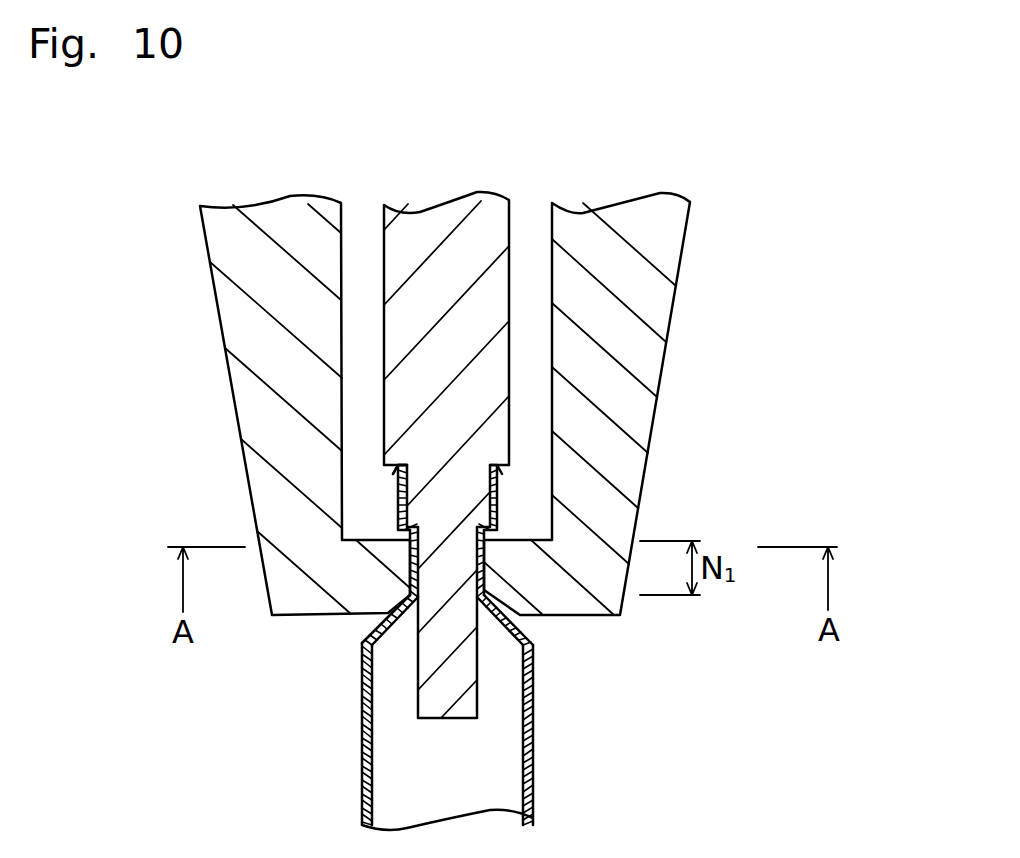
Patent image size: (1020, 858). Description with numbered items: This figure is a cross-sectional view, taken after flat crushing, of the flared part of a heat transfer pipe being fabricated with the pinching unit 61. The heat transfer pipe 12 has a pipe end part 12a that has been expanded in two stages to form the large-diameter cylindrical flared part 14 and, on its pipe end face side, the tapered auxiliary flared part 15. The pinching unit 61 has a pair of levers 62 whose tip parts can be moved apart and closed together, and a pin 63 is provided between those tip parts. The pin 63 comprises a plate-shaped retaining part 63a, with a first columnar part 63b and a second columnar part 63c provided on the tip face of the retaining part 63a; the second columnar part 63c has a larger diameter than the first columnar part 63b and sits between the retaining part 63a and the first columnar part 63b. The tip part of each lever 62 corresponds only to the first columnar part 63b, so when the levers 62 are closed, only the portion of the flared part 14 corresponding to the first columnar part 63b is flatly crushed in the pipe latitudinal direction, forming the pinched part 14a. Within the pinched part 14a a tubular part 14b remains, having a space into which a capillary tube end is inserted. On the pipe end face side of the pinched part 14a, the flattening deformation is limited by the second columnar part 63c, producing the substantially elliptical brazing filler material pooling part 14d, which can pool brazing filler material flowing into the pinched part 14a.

The heat transfer pipe 12 is at (531, 736).
The pipe end part 12a is at (567, 732).
The flared part 14 is at (512, 564).
The pinched part 14a is at (529, 518).
The tubular part 14b is at (492, 570).
The brazing filler material pooling part 14d is at (500, 497).
The auxiliary flared part 15 is at (397, 466).
The pinching unit 61 is at (459, 379).
The lever 62 is at (192, 306).
The pin 63 is at (519, 449).
The retaining part 63a is at (571, 331).
The first columnar part 63b is at (435, 703).
The second columnar part 63c is at (447, 488).